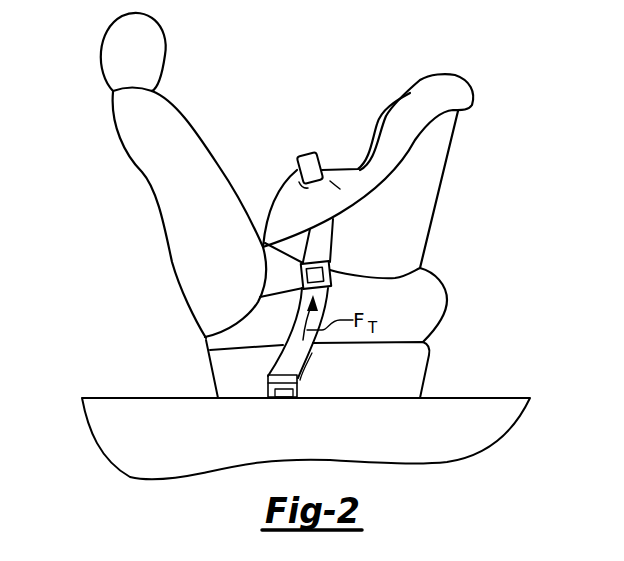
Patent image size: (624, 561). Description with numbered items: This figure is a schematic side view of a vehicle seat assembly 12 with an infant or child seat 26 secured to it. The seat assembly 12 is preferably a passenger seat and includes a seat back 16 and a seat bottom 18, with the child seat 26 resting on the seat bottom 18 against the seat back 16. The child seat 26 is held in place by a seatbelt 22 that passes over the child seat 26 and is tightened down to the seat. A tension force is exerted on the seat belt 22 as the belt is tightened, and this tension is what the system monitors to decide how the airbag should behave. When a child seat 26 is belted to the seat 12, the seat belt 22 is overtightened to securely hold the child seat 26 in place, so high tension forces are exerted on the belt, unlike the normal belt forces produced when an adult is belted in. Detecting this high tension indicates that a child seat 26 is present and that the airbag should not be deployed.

The vehicle seat assembly 12 is at (296, 246).
The seat back 16 is at (178, 241).
The seat bottom 18 is at (353, 377).
The seatbelt 22 is at (313, 168).
The infant or child seat 26 is at (417, 227).